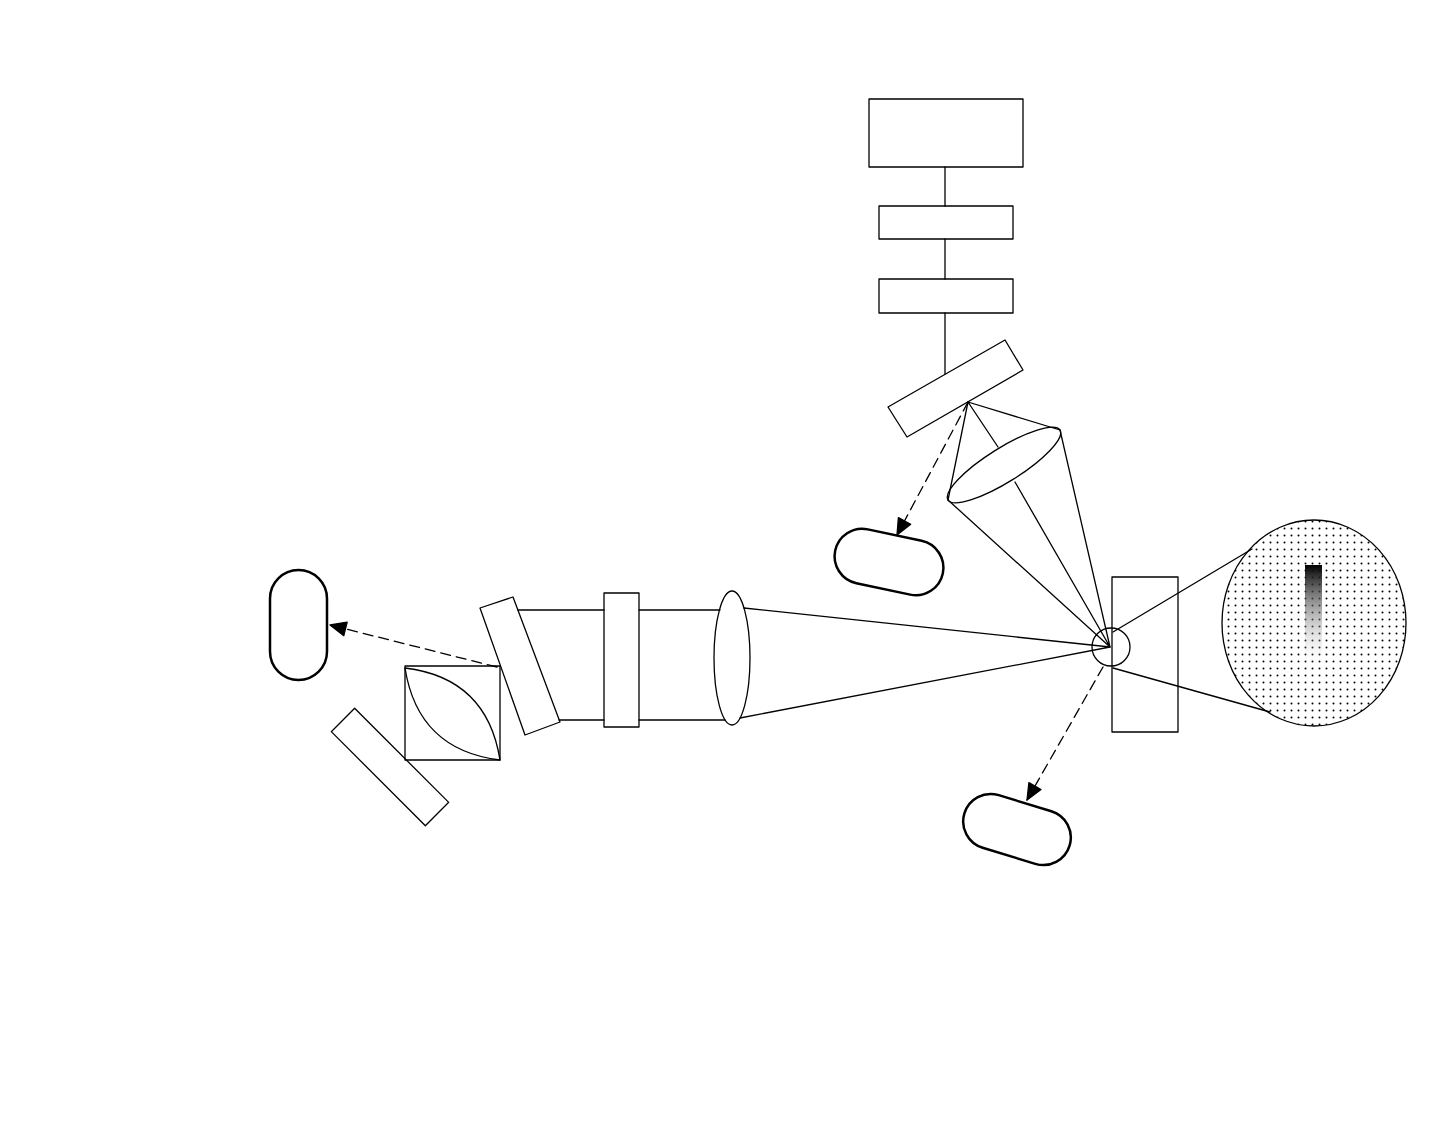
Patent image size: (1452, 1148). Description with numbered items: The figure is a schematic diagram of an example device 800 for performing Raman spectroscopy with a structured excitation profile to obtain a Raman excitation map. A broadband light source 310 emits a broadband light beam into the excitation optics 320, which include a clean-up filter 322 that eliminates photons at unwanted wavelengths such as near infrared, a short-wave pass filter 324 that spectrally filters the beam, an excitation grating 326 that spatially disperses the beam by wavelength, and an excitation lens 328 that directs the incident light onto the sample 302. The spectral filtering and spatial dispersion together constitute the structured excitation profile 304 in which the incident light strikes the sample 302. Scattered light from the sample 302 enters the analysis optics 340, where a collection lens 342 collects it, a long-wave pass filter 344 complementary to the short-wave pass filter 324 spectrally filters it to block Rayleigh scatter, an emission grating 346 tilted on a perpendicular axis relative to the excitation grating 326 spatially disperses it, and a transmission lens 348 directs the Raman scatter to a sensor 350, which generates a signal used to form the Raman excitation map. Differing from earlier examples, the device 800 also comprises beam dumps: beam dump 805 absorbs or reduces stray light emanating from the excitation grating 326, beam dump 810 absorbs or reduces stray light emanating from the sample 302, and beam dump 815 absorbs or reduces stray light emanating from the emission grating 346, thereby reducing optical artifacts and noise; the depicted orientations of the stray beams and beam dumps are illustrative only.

The device 800 is at (283, 202).
The broadband light source 310 is at (869, 131).
The excitation optics 320 is at (857, 502).
The clean-up filter 322 is at (1013, 226).
The short-wave pass filter 324 is at (1013, 300).
The excitation grating 326 is at (1017, 360).
The excitation lens 328 is at (1060, 430).
The sample 302 is at (1142, 732).
The structured excitation profile 304 is at (1340, 586).
The analysis optics 340 is at (758, 583).
The collection lens 342 is at (740, 722).
The long-wave pass filter 344 is at (623, 727).
The emission grating 346 is at (537, 733).
The transmission lens 348 is at (497, 762).
The sensor 350 is at (393, 795).
The beam dump 805 is at (850, 533).
The beam dump 810 is at (968, 815).
The beam dump 815 is at (270, 592).